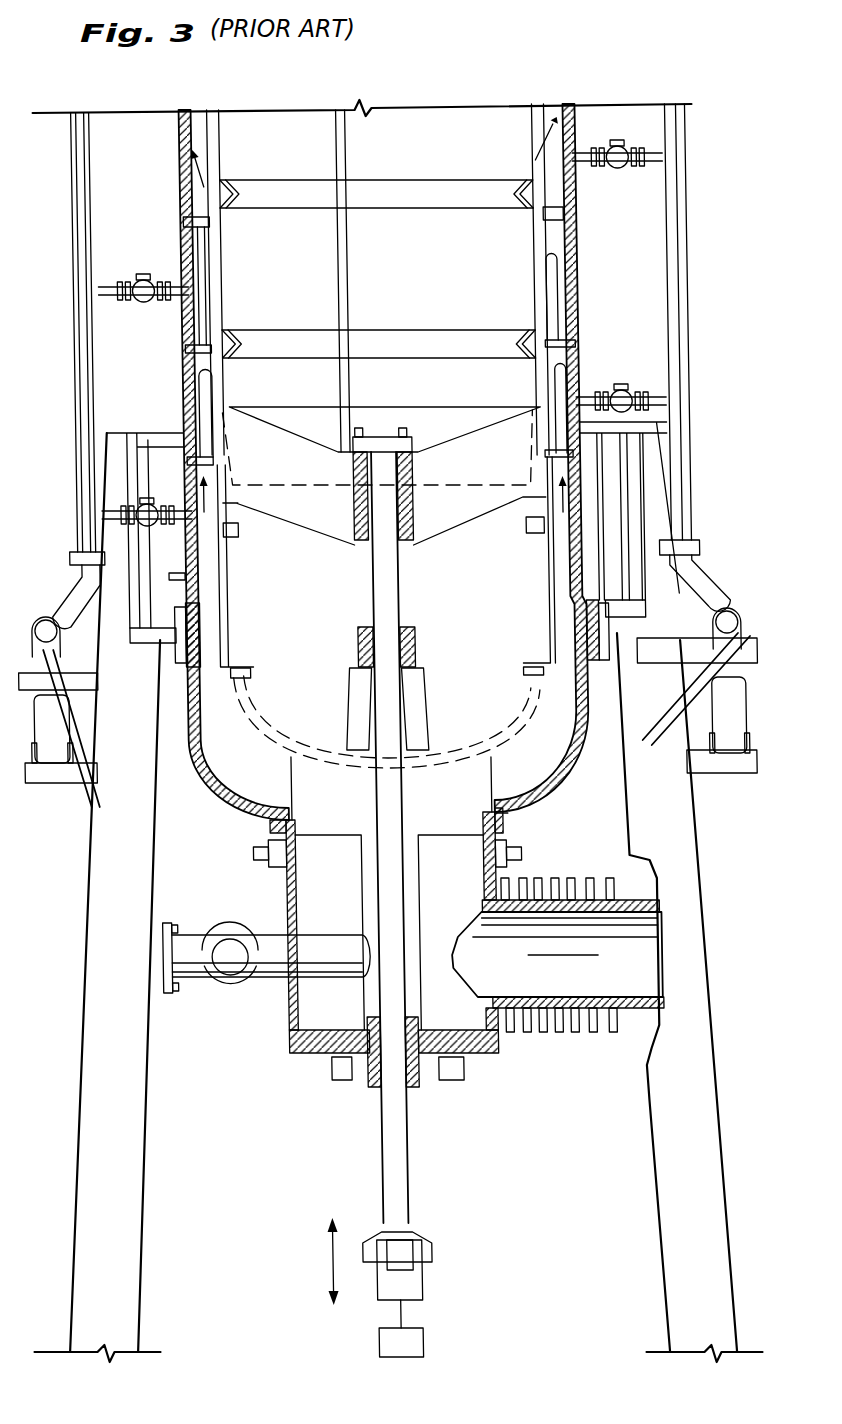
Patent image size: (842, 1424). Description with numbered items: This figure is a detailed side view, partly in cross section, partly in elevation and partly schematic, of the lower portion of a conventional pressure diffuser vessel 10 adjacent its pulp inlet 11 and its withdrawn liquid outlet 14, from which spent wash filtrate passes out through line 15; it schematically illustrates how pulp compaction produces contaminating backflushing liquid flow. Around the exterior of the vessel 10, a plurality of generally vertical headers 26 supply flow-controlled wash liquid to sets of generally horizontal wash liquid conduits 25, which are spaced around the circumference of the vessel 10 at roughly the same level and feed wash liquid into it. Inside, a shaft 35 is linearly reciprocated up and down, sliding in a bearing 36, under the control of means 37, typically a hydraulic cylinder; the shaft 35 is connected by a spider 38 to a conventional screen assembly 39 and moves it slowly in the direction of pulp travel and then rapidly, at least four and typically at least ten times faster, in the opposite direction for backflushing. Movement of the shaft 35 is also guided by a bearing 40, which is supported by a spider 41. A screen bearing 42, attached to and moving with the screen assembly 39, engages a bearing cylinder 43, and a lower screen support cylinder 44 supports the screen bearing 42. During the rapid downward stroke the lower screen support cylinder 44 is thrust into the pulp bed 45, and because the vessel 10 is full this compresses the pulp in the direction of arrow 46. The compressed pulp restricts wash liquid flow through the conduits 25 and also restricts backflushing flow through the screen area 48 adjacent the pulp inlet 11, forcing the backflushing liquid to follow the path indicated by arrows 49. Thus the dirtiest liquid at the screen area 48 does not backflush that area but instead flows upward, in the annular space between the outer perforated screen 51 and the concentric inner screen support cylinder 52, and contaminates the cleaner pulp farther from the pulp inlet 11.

The vessel 10 is at (596, 103).
The pulp inlet 11 is at (620, 1017).
The withdrawn liquid outlet 14 is at (355, 858).
The line 15 is at (260, 978).
The wash liquid conduits 25 is at (108, 285).
The vertical header 26 is at (78, 367).
The shaft 35 is at (392, 1130).
The bearing 36 is at (348, 1082).
The means for moving 37 is at (400, 1345).
The spider 38 is at (440, 522).
The screen assembly 39 is at (515, 280).
The bearing 40 is at (426, 645).
The spider 41 is at (303, 657).
The screen bearing 42 is at (535, 643).
The bearing cylinder 43 is at (533, 562).
The lower screen support cylinder 44 is at (566, 568).
The pulp bed 45 is at (560, 685).
The arrow 46 is at (190, 533).
The screen area 48 is at (190, 366).
The arrows 49 is at (228, 178).
The outer perforated screen 51 is at (215, 276).
The inner screen support cylinder 52 is at (212, 245).